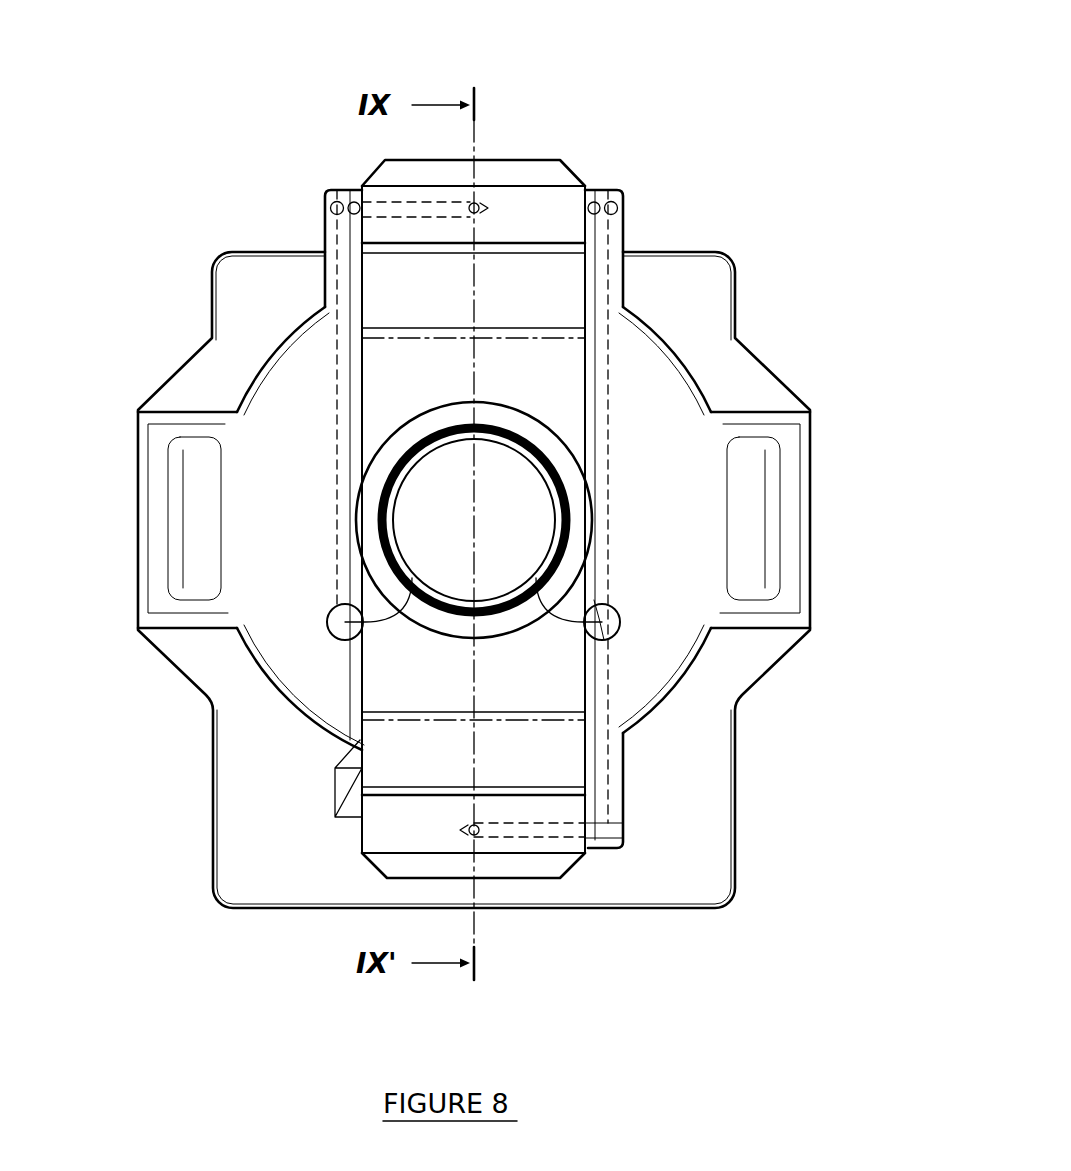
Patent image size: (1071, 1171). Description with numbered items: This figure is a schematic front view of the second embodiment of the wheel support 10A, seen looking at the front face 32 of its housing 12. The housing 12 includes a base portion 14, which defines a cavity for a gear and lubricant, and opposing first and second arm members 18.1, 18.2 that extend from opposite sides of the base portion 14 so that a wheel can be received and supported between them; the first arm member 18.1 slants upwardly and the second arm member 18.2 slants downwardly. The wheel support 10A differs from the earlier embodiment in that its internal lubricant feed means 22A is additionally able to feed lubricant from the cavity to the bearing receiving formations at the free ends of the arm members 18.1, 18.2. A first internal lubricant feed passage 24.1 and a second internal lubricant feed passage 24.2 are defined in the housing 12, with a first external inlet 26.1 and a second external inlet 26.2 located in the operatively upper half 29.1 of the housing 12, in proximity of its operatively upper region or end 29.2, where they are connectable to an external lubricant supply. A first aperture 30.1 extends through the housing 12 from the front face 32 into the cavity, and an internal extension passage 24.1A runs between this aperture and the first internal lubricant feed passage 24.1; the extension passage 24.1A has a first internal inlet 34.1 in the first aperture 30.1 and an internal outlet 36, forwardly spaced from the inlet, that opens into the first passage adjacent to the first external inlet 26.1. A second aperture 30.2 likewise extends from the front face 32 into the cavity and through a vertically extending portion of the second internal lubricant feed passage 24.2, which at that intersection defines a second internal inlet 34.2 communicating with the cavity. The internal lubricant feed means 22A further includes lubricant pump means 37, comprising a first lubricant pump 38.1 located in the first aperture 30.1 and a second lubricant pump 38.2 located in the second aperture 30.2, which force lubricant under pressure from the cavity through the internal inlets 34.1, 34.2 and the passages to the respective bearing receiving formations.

The wheel support 10A is at (757, 157).
The housing 12 is at (193, 820).
The base portion 14 is at (745, 385).
The first arm member 18.1 is at (508, 200).
The second arm member 18.2 is at (515, 865).
The internal lubricant feed means 22A is at (645, 278).
The first internal lubricant feed passage 24.1 is at (392, 200).
The internal extension passage 24.1A is at (365, 418).
The second internal lubricant feed passage 24.2 is at (535, 823).
The first external inlet 26.1 is at (326, 205).
The second external inlet 26.2 is at (627, 207).
The operatively upper half 29.1 is at (812, 262).
The operatively upper region or end 29.2 is at (500, 120).
The first aperture 30.1 is at (328, 640).
The second aperture 30.2 is at (618, 605).
The front face 32 is at (440, 689).
The first internal inlet 34.1 is at (340, 600).
The second internal inlet 34.2 is at (612, 660).
The internal outlet 36 is at (326, 236).
The lubricant pump means 37 is at (735, 548).
The first lubricant pump 38.1 is at (412, 585).
The second lubricant pump 38.2 is at (536, 585).